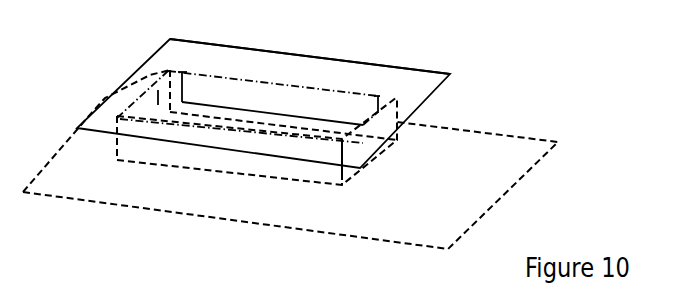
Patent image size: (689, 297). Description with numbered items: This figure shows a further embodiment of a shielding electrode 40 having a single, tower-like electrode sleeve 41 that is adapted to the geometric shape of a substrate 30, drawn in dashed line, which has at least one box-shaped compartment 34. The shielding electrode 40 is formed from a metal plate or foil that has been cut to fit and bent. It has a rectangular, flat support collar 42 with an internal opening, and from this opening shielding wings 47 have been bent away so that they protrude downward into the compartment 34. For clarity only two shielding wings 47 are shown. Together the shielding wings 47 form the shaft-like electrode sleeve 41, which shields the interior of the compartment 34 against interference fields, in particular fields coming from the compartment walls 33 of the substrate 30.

The substrate 30 is at (428, 232).
The compartment walls 33 is at (197, 165).
The box-shaped compartment 34 is at (341, 148).
The shielding electrode 40 is at (485, 78).
The electrode sleeve 41 is at (241, 100).
The support collar 42 is at (377, 80).
The shielding wings 47 is at (158, 105).